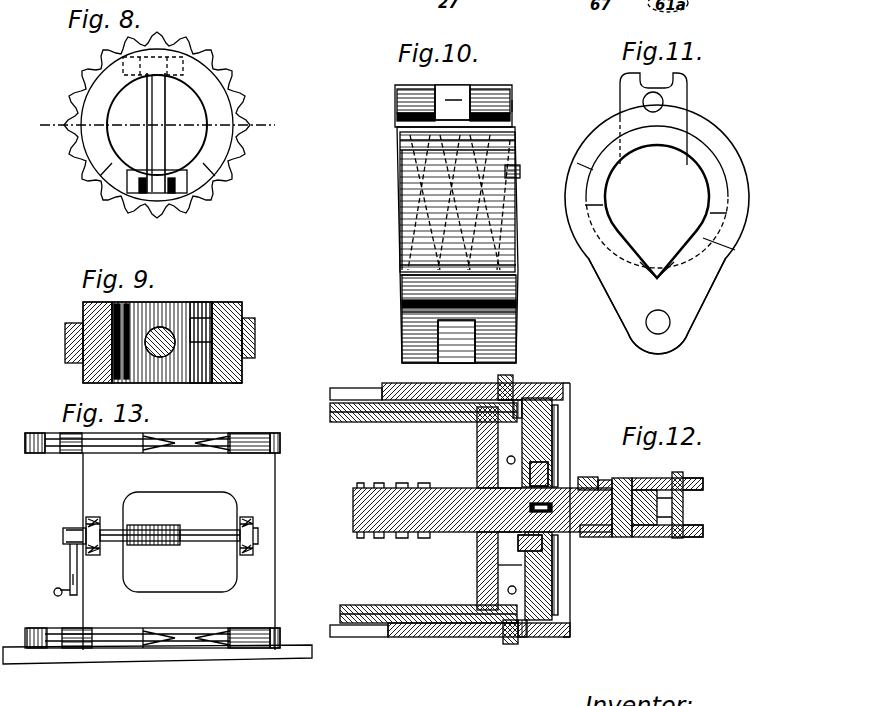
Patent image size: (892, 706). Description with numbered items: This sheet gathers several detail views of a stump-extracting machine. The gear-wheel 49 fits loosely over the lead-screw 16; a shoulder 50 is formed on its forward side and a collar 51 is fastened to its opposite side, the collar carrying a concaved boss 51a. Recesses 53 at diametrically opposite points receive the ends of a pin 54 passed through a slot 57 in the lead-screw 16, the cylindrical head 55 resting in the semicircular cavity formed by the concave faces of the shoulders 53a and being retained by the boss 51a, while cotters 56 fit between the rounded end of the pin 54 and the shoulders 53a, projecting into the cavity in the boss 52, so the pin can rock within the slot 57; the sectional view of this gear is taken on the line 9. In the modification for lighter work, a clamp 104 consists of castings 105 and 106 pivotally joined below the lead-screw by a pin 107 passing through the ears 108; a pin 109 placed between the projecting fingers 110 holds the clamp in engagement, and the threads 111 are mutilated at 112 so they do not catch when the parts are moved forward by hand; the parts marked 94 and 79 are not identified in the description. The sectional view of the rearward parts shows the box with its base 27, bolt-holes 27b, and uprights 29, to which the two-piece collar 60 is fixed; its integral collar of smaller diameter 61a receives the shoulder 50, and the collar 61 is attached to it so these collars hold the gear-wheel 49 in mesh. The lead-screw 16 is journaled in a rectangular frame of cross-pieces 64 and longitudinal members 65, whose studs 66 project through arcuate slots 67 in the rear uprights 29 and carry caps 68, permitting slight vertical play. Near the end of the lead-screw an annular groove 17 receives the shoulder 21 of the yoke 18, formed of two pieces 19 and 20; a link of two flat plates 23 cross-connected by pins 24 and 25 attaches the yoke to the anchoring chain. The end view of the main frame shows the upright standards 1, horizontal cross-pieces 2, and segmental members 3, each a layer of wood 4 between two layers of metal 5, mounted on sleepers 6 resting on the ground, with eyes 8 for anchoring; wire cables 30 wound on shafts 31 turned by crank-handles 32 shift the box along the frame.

In FIG. 8, the gear-wheel 49 is at (232, 77).
In FIG. 9, the gear-wheel 49 is at (255, 323).
In FIG. 12, the gear-wheel 49 is at (512, 586).
In FIG. 8, the collar 51 is at (207, 70).
In FIG. 9, the collar 51 is at (230, 302).
In FIG. 12, the collar 51 is at (556, 535).
In FIG. 8, the section line 9 is at (156, 127).
In FIG. 8, the pin 54 is at (152, 105).
In FIG. 9, the pin 54 is at (167, 330).
In FIG. 12, the pin 54 is at (530, 550).
In FIG. 8, the recesses 53 is at (166, 125).
In FIG. 8, the shoulders 53a is at (130, 180).
In FIG. 8, the cylindrical head 55 is at (157, 63).
In FIG. 8, the cotters 56 is at (172, 193).
In FIG. 9, the cotters 56 is at (173, 345).
In FIG. 9, the boss 52 is at (75, 340).
In FIG. 9, the concaved boss 51a is at (245, 342).
In FIG. 9, the shoulder 50 is at (237, 383).
In FIG. 12, the shoulder 50 is at (530, 470).
In FIG. 13, the upright standards 1 is at (275, 530).
In FIG. 13, the horizontal cross-pieces 2 is at (180, 532).
In FIG. 13, the segmental members 3 is at (45, 628).
In FIG. 13, the layer of wood 4 is at (270, 632).
In FIG. 13, the layers of metal 5 is at (197, 638).
In FIG. 13, the sleepers 6 is at (180, 653).
In FIG. 13, the eyes 8 is at (60, 450).
In FIG. 13, the wire cables 30 is at (157, 545).
In FIG. 13, the shafts 31 is at (208, 541).
In FIG. 13, the crank-handles 32 is at (66, 572).
In FIG. 10, the clamp 104 is at (457, 245).
In FIG. 11, the clamp 104 is at (657, 229).
In FIG. 10, the projecting fingers 110 is at (478, 88).
In FIG. 11, the projecting fingers 110 is at (672, 85).
In FIG. 10, the pin 109 is at (518, 107).
In FIG. 11, the pin 109 is at (650, 102).
In FIG. 10, the stop lug 94 is at (518, 245).
In FIG. 10, the threads 111 is at (405, 183).
In FIG. 11, the threads 111 is at (600, 221).
In FIG. 10, the pin 107 is at (410, 315).
In FIG. 11, the pin 107 is at (655, 322).
In FIG. 11, the mutilated portion 112 is at (657, 276).
In FIG. 11, the casting 105 is at (718, 267).
In FIG. 11, the casting 106 is at (618, 292).
In FIG. 11, the ears 108 is at (690, 325).
In FIG. 12, the uprights 29 is at (395, 637).
In FIG. 12, the longitudinal members 65 is at (362, 398).
In FIG. 12, the housing wall 79 is at (390, 422).
In FIG. 12, the cross-pieces 64 is at (478, 440).
In FIG. 12, the collar 61 is at (556, 428).
In FIG. 12, the collar 60 is at (556, 600).
In FIG. 12, the lead-screw 16 is at (409, 496).
In FIG. 12, the base 27 is at (376, 582).
In FIG. 12, the bolt-holes 27b is at (507, 460).
In FIG. 12, the slot 57 is at (550, 513).
In FIG. 12, the collar of smaller diameter 61a is at (500, 568).
In FIG. 12, the cap 68 is at (508, 645).
In FIG. 12, the arcuate slots 67 is at (503, 634).
In FIG. 12, the studs 66 is at (526, 637).
In FIG. 12, the annular groove 17 is at (585, 479).
In FIG. 12, the shoulder 21 is at (592, 478).
In FIG. 12, the yoke piece 19 is at (618, 479).
In FIG. 12, the yoke piece 20 is at (600, 538).
In FIG. 12, the yoke 18 is at (648, 478).
In FIG. 12, the pin 24 is at (642, 538).
In FIG. 12, the pin 25 is at (679, 472).
In FIG. 12, the flat plates 23 is at (692, 525).